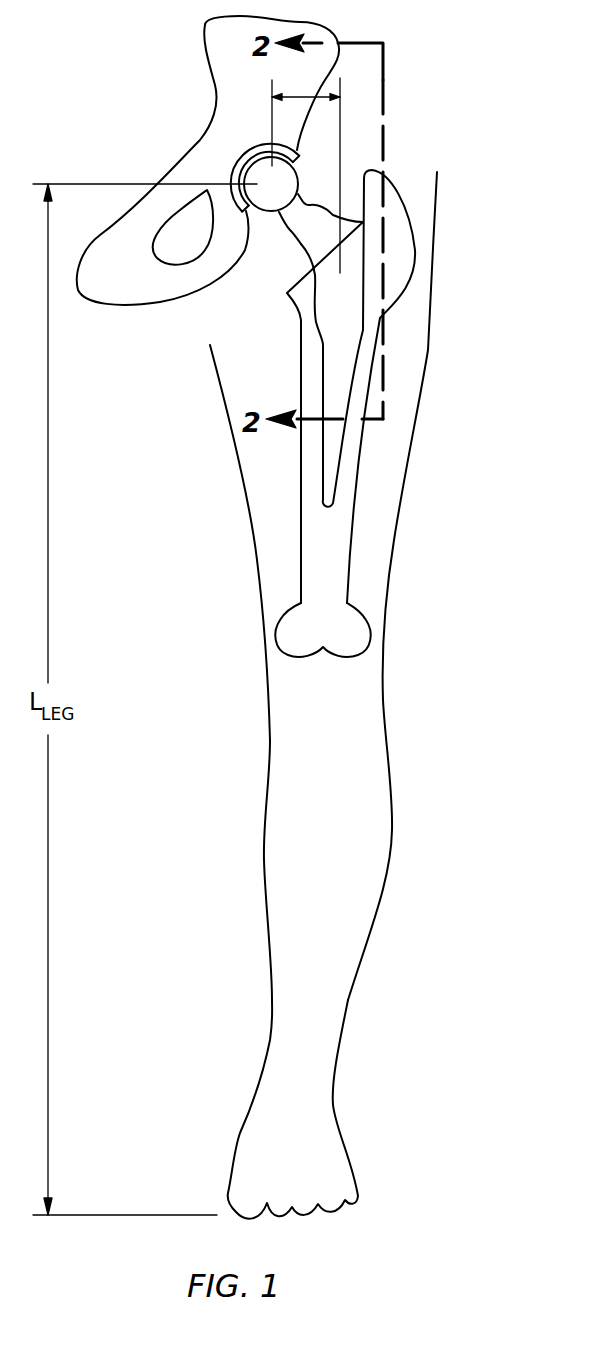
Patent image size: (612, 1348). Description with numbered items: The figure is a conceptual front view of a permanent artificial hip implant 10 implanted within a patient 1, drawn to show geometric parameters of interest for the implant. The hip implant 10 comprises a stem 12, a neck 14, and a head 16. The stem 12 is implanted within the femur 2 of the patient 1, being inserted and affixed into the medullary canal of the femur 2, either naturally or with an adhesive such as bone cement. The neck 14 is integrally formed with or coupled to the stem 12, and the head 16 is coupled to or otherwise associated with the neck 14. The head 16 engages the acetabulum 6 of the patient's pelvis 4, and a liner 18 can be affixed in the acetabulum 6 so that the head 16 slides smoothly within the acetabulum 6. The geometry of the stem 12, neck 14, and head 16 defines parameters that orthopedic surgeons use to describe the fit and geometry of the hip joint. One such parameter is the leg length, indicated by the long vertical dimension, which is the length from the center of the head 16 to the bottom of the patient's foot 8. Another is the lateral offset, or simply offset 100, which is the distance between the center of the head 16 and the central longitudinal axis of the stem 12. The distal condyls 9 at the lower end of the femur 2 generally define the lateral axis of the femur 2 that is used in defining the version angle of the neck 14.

The patient 1 is at (432, 326).
The femur 2 is at (357, 497).
The pelvis 4 is at (205, 28).
The acetabulum 6 is at (242, 158).
The foot 8 is at (347, 1145).
The distal condyls 9 is at (350, 640).
The hip implant 10 is at (332, 292).
The stem 12 is at (347, 298).
The neck 14 is at (297, 222).
The head 16 is at (283, 199).
The liner 18 is at (288, 157).
The offset 100 is at (307, 96).